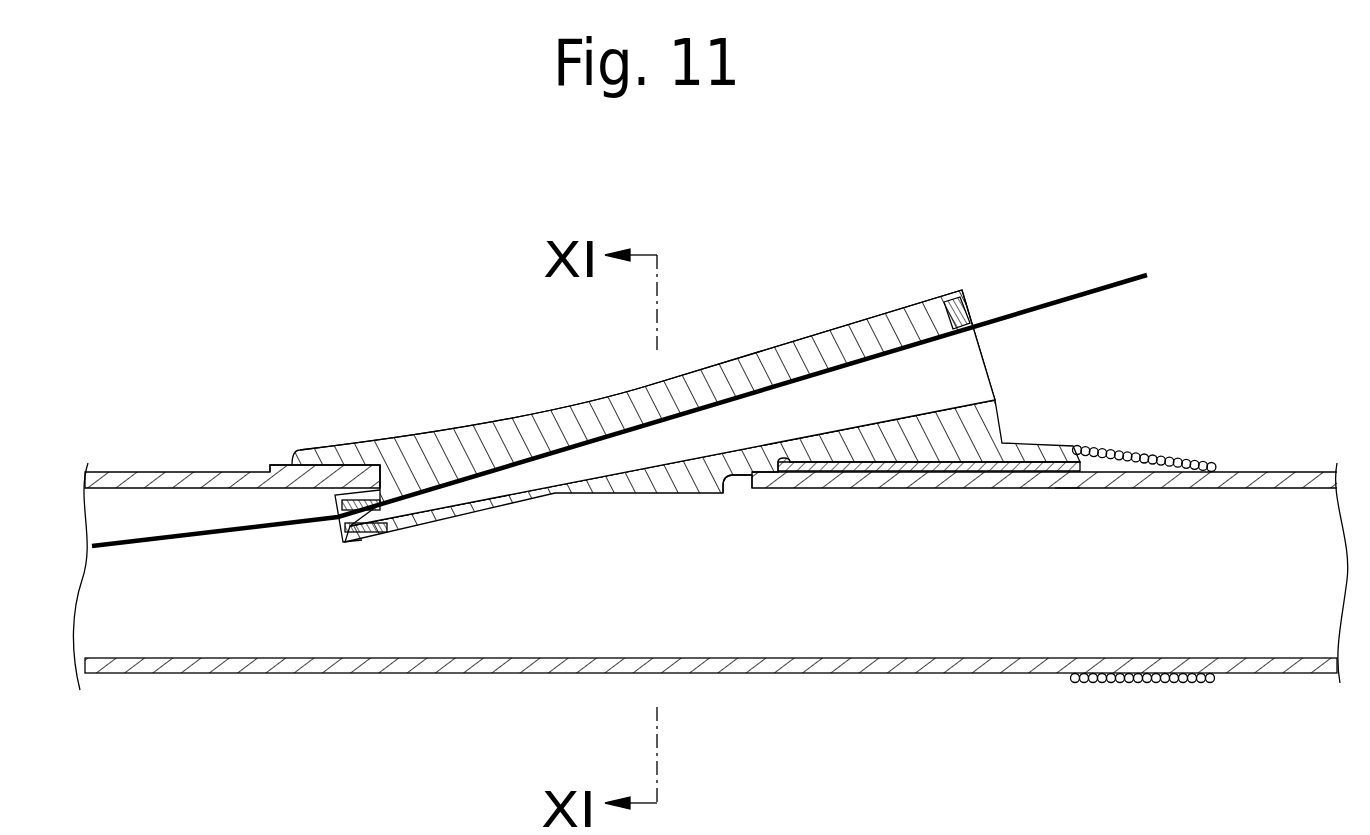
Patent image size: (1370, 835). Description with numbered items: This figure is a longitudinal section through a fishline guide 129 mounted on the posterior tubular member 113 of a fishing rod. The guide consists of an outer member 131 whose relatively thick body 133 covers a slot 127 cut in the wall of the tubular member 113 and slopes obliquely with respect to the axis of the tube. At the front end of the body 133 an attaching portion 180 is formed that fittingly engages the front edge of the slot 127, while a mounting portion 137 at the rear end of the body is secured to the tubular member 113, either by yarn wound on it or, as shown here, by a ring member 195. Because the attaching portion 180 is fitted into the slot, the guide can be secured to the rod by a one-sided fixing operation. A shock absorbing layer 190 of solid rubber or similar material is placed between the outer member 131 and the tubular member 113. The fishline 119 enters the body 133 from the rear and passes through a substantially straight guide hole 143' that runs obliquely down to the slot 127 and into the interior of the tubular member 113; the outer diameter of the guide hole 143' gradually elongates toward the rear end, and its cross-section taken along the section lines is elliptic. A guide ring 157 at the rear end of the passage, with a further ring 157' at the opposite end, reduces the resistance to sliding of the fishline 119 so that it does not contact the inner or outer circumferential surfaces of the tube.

The posterior tubular member 113 is at (918, 676).
The fishline 119 is at (1118, 280).
The slot 127 is at (742, 498).
The fishline guide 129 is at (724, 325).
The outer member 131 is at (806, 318).
The body 133 is at (884, 323).
The mounting portion 137 is at (1068, 458).
The guide hole 143' is at (712, 510).
The guide ring 157 is at (998, 273).
The proximal ferrule 157' is at (364, 569).
The attaching portion 180 is at (352, 490).
The shock absorbing layer 190 is at (1065, 490).
The ring member 195 is at (1178, 447).